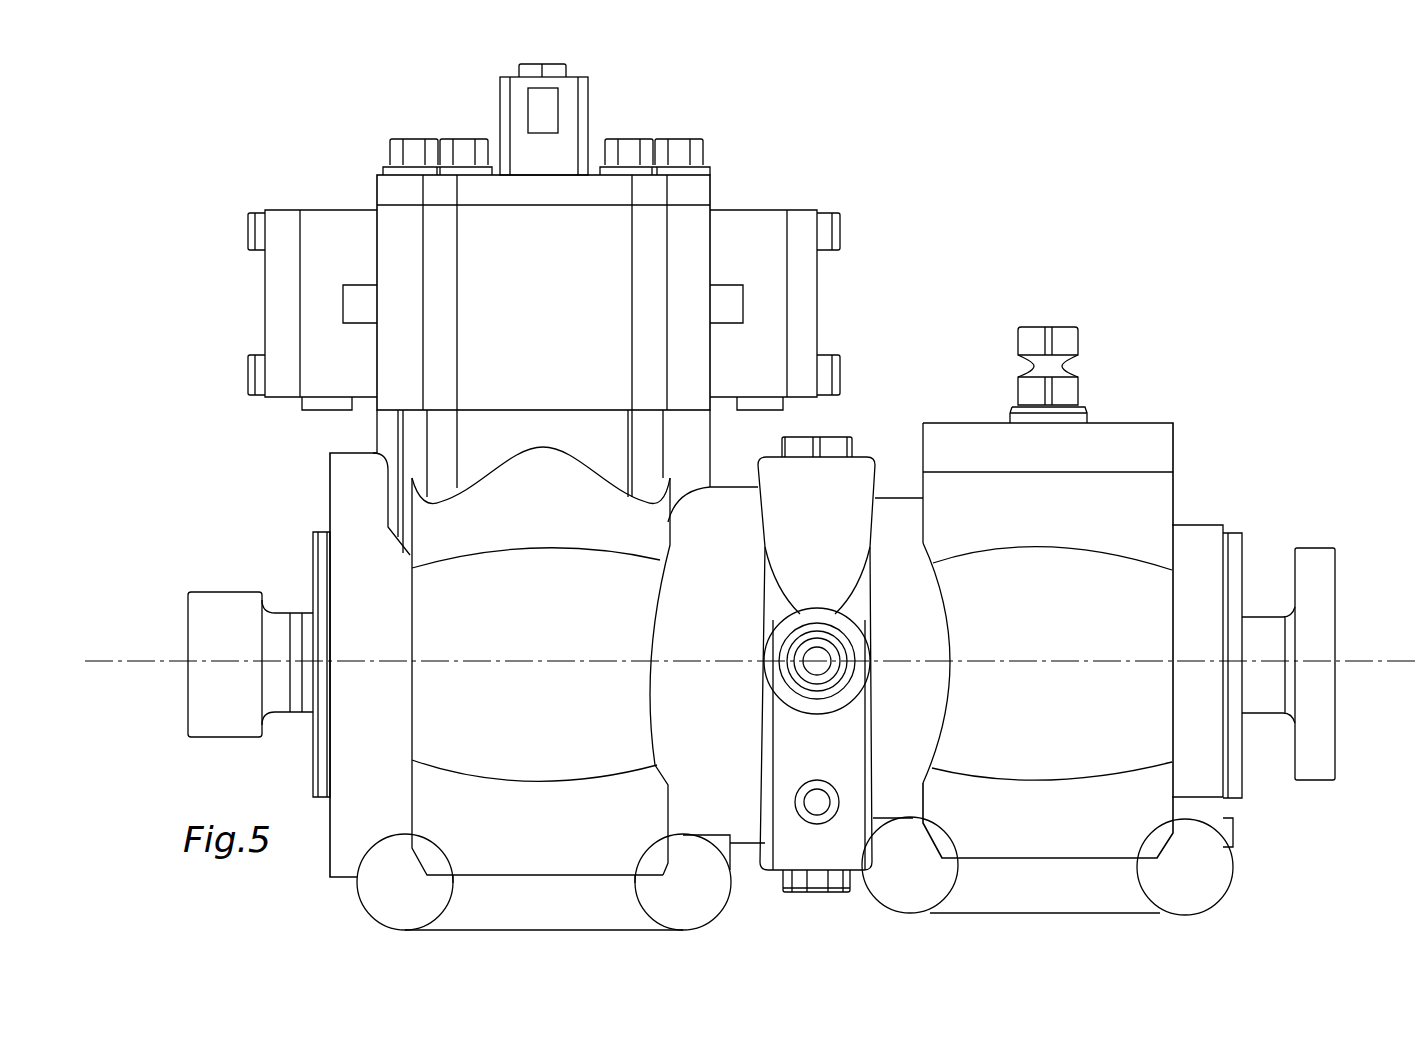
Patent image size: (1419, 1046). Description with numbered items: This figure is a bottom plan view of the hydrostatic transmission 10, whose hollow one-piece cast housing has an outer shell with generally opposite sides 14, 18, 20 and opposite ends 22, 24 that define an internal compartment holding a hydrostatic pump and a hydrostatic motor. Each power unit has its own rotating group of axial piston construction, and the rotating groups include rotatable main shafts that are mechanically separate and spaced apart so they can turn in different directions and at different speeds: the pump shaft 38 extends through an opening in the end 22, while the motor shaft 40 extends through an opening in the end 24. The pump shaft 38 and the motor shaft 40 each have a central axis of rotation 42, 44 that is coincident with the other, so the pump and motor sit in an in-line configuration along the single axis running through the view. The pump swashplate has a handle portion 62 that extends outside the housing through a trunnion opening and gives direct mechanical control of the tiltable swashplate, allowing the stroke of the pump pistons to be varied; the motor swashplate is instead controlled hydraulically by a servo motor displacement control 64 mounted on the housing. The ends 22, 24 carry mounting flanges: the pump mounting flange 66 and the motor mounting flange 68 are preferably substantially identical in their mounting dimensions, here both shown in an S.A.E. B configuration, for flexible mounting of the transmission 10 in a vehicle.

The hydrostatic transmission 10 is at (972, 220).
The side 14 is at (770, 872).
The side 18 is at (906, 497).
The side 20 is at (718, 623).
The end 22 is at (1227, 527).
The end 24 is at (330, 507).
The pump shaft 38 is at (1257, 713).
The motor shaft 40 is at (290, 713).
The central axis of rotation 42 is at (1407, 663).
The central axis of rotation 44 is at (113, 662).
The handle portion 62 is at (1030, 327).
The servo motor displacement control 64 is at (273, 206).
The pump mounting flange 66 is at (1237, 797).
The motor mounting flange 68 is at (313, 776).